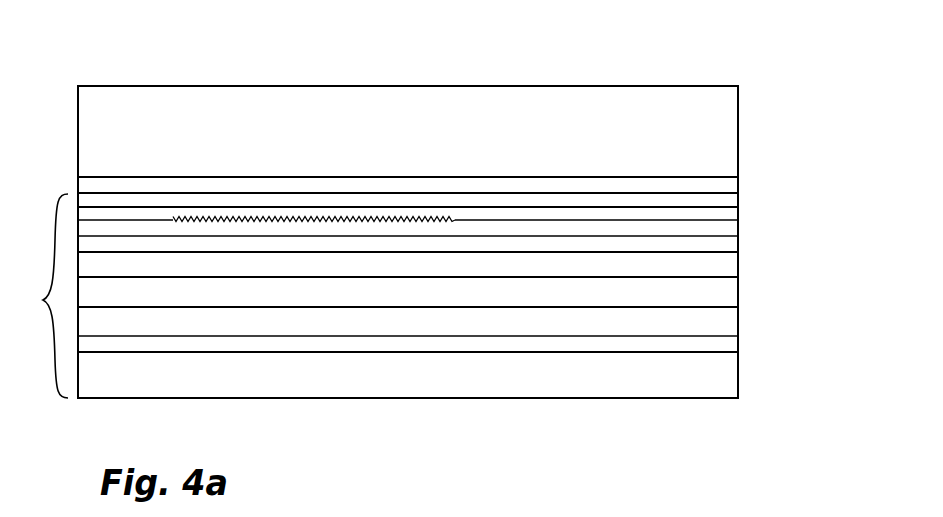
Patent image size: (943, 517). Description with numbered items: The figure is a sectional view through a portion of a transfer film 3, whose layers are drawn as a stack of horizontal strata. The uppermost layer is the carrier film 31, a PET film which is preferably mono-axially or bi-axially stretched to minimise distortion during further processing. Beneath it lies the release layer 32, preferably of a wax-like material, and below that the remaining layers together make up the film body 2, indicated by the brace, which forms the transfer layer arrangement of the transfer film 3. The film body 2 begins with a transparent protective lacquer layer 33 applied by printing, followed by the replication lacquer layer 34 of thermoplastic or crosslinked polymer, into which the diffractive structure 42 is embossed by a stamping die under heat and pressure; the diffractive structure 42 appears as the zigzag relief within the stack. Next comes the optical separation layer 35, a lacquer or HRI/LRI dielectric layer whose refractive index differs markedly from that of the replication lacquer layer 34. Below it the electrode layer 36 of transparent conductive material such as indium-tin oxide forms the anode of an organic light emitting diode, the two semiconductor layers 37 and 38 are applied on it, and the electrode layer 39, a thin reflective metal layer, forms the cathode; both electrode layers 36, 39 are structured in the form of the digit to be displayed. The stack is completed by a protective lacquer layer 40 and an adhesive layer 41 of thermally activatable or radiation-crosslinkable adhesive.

The film body 2 is at (44, 296).
The transfer film 3 is at (724, 62).
The carrier film 31 is at (728, 130).
The release layer 32 is at (730, 185).
The lacquer layer 33 is at (730, 199).
The replication lacquer layer 34 is at (730, 213).
The optical separation layer 35 is at (730, 230).
The electrode layer 36 is at (730, 245).
The semiconductor layer 37 is at (730, 269).
The semiconductor layer 38 is at (730, 296).
The electrode layer 39 is at (730, 322).
The protective lacquer layer 40 is at (730, 347).
The adhesive layer 41 is at (726, 383).
The diffractive structure 42 is at (294, 214).